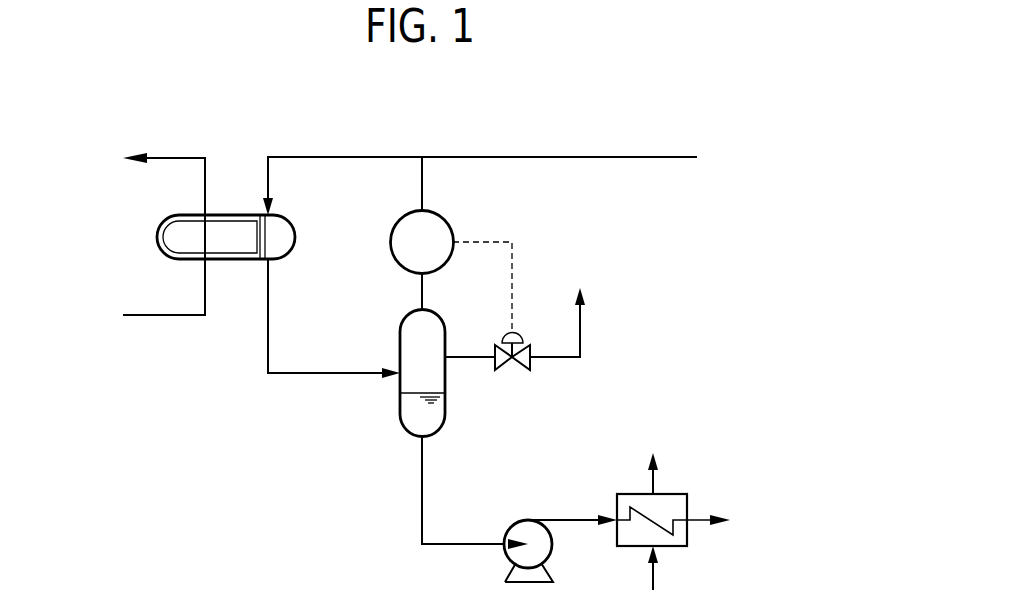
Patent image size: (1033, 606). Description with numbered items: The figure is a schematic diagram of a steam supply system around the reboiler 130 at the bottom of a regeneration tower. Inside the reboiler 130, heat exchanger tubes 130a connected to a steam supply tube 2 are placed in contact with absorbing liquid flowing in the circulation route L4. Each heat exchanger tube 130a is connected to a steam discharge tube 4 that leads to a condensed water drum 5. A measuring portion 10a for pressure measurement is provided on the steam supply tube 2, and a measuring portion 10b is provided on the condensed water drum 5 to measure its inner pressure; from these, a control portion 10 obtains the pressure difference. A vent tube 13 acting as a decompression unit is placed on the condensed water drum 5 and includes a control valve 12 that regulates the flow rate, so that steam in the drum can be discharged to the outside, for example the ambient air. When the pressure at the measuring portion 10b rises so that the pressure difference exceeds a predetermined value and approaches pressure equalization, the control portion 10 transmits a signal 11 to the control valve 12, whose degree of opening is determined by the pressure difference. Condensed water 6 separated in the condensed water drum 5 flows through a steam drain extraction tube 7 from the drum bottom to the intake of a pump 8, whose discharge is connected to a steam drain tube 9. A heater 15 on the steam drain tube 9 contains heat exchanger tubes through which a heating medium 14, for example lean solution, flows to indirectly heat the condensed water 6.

The circulation route L4 is at (177, 155).
The steam supply tube 2 is at (309, 156).
The reboiler 130 is at (295, 226).
The heat exchanger tube 130a is at (232, 214).
The steam discharge tube 4 is at (269, 307).
The condensed water drum 5 is at (399, 343).
The condensed water 6 is at (430, 410).
The steam drain extraction tube 7 is at (420, 486).
The pump 8 is at (518, 518).
The steam drain tube 9 is at (578, 523).
The control portion 10 is at (453, 222).
The measuring portion 10a is at (424, 160).
The measuring portion 10b is at (419, 308).
The signal 11 is at (514, 255).
The control valve 12 is at (506, 331).
The vent tube 13 is at (556, 360).
The heating medium 14 is at (650, 480).
The heater 15 is at (674, 492).